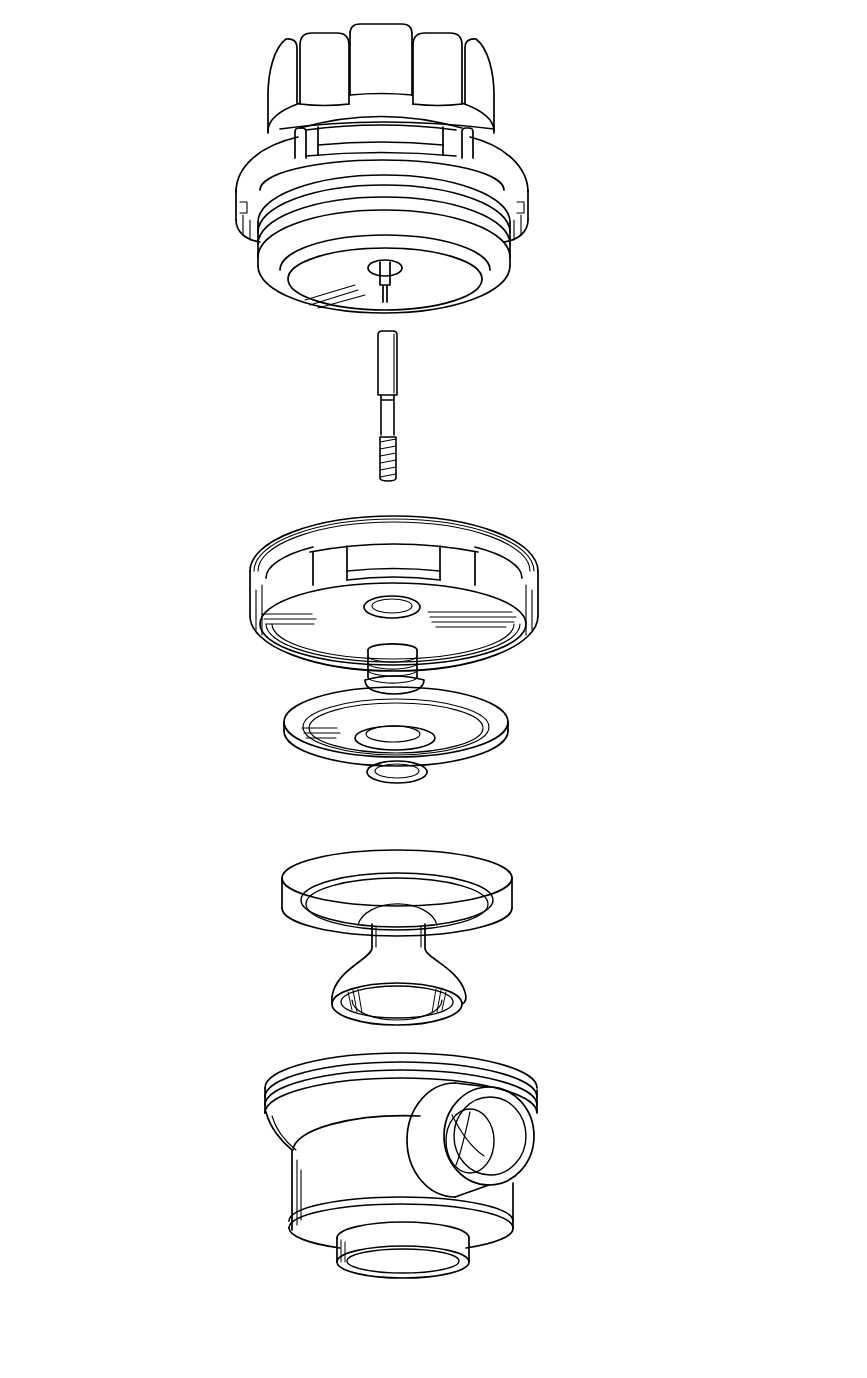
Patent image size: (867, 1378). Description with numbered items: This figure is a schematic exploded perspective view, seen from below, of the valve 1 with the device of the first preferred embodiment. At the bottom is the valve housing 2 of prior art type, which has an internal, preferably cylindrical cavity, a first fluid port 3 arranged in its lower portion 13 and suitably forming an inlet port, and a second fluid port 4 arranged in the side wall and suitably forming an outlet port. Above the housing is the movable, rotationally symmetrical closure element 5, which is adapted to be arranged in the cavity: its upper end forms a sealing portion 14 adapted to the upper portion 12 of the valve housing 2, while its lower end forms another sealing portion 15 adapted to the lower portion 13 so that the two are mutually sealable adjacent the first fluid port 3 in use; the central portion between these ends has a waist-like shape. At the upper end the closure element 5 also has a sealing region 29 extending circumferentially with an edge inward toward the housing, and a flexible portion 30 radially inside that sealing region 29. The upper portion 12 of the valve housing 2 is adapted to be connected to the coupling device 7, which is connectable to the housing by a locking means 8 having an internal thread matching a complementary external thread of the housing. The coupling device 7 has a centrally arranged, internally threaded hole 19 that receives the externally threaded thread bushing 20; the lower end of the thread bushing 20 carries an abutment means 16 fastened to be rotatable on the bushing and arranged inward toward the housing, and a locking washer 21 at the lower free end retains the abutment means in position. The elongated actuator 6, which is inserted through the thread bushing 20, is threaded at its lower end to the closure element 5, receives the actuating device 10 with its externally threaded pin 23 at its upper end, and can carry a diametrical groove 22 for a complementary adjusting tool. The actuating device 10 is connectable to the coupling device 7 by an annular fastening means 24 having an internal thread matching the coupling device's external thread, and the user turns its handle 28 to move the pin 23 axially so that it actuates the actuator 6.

The valve 1 is at (163, 99).
The valve housing 2 is at (232, 1131).
The first fluid port 3 is at (413, 1272).
The second fluid port 4 is at (510, 1154).
The closure element 5 is at (518, 929).
The actuator 6 is at (398, 368).
The coupling device 7 is at (575, 528).
The locking means 8 is at (538, 615).
The actuating device 10 is at (517, 41).
The upper portion 12 is at (530, 1082).
The lower portion 13 is at (478, 1257).
The sealing portion 14 is at (282, 894).
The sealing portion 15 is at (333, 1005).
The abutment means 16 is at (470, 737).
The hole 19 is at (380, 615).
The thread bushing 20 is at (368, 668).
The locking washer 21 is at (366, 777).
The diametrical groove 22 is at (393, 333).
The pin 23 is at (373, 300).
The fastening means 24 is at (520, 171).
The handle 28 is at (290, 70).
The sealing region 29 is at (307, 917).
The flexible portion 30 is at (458, 917).